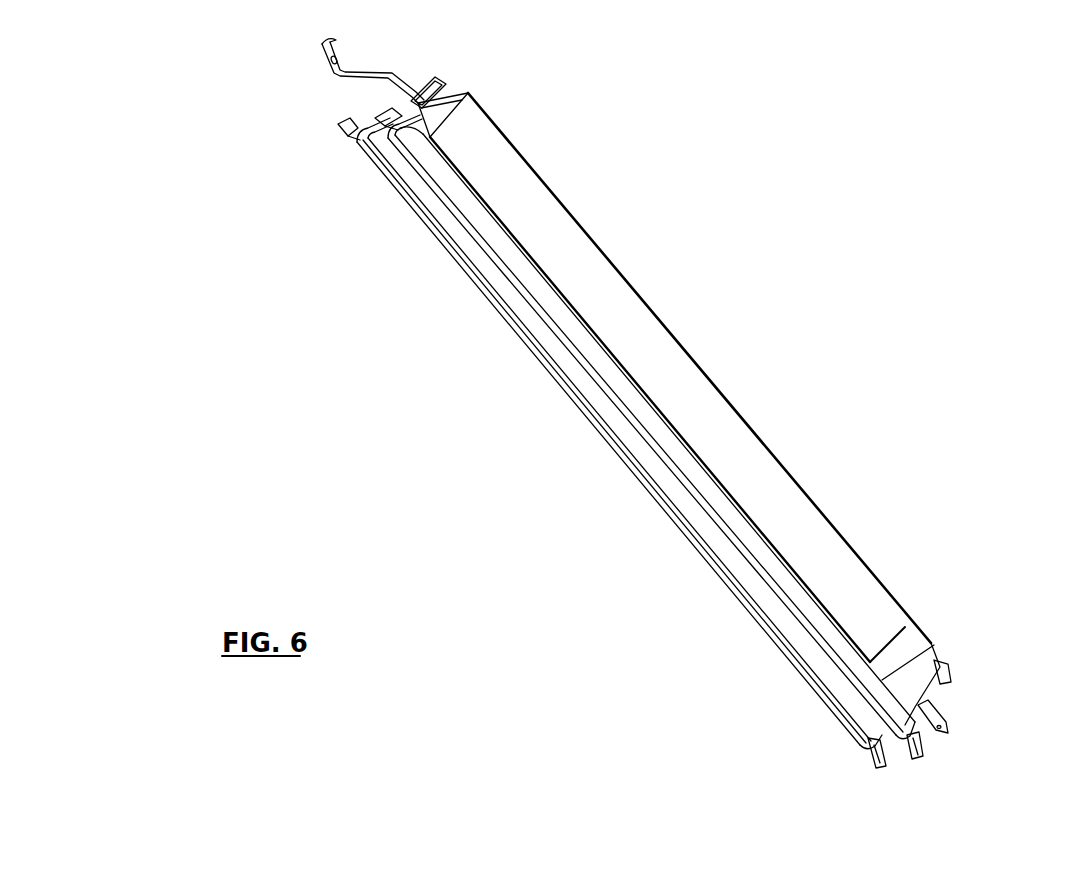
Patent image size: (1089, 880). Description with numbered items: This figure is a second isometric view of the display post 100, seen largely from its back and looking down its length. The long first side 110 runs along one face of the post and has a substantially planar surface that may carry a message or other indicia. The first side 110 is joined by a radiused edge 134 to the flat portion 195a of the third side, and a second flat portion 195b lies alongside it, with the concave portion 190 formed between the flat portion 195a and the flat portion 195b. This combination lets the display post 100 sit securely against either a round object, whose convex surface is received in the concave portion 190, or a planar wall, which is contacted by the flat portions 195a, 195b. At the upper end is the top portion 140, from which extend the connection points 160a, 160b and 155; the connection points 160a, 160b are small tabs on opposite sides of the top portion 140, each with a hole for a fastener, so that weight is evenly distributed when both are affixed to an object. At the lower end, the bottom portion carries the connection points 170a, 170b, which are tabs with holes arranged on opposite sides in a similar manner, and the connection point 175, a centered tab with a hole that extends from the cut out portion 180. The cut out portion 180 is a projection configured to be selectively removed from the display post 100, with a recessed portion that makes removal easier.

The display post 100 is at (553, 550).
The first side 110 is at (628, 333).
The radiused edge 134 is at (415, 142).
The top portion 140 is at (420, 100).
The connection point 155 is at (325, 47).
The first connection point 160a is at (395, 120).
The second connection point 160b is at (340, 128).
The connection point 170a is at (918, 752).
The connection point 170b is at (868, 758).
The connection point 175 is at (948, 722).
The cut out portion 180 is at (942, 672).
The concave portion 190 is at (553, 348).
The flat portion 195a is at (475, 230).
The flat portion 195b is at (443, 255).